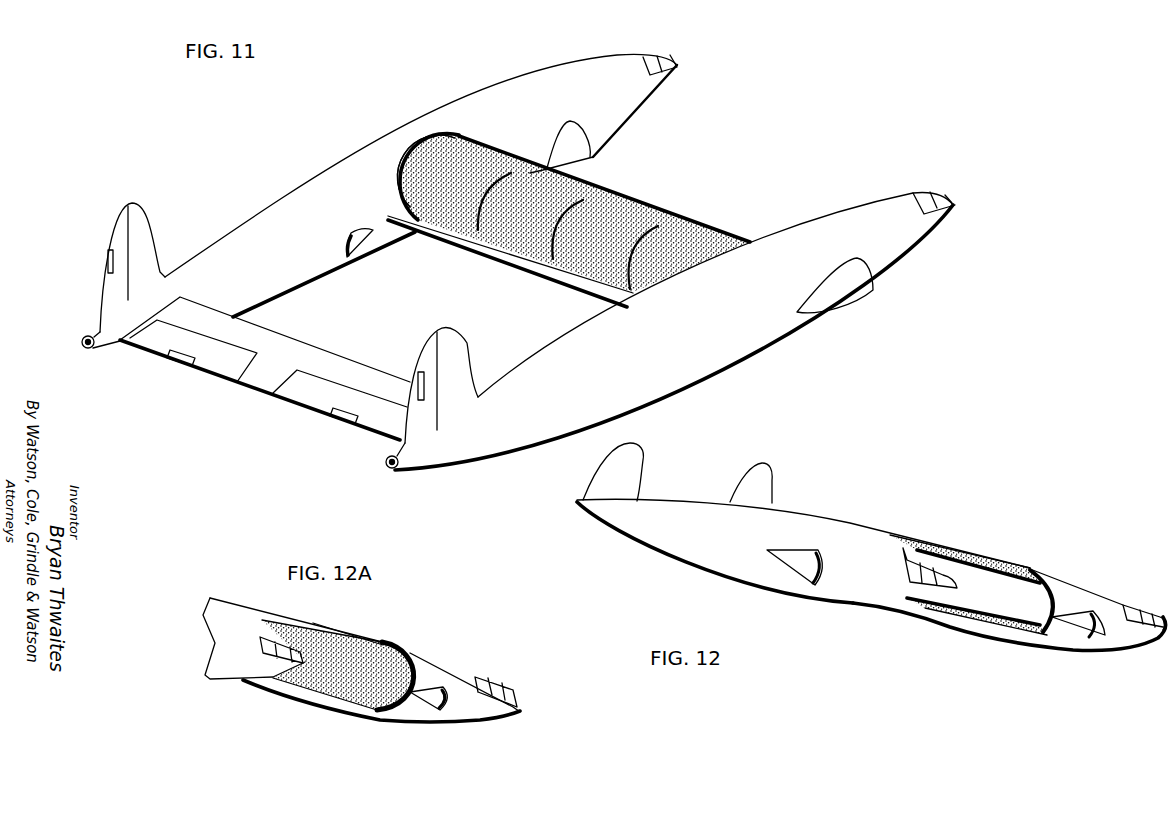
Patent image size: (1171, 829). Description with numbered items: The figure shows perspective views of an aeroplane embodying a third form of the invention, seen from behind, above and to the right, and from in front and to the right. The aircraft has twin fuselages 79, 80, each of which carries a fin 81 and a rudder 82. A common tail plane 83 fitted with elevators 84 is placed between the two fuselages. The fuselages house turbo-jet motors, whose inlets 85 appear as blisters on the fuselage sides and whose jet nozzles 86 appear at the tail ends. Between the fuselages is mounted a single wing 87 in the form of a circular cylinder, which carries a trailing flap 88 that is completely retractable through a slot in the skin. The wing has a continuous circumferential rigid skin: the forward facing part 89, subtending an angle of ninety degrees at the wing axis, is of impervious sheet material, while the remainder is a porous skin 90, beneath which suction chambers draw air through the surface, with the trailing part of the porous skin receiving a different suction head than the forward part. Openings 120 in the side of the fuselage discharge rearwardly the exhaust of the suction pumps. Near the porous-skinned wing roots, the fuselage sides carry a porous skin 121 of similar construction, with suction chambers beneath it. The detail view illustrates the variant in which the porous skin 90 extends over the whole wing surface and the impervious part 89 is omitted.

In FIG. 11, the fuselage 79 is at (790, 347).
In FIG. 12, the fuselage 79 is at (843, 527).
In FIG. 12A, the fuselage 79 is at (227, 612).
In FIG. 11, the fuselage 80 is at (482, 108).
In FIG. 12, the fuselage 80 is at (1083, 587).
In FIG. 12A, the fuselage 80 is at (440, 670).
In FIG. 11, the fin 81 is at (140, 232).
In FIG. 12, the fin 81 is at (753, 487).
In FIG. 11, the rudder 82 is at (118, 231).
In FIG. 11, the tail plane 83 is at (283, 343).
In FIG. 11, the elevators 84 is at (218, 365).
In FIG. 11, the inlets 85 is at (592, 143).
In FIG. 12, the inlets 85 is at (828, 578).
In FIG. 12A, the inlets 85 is at (445, 707).
In FIG. 11, the jet nozzles 86 is at (95, 350).
In FIG. 11, the wing 87 is at (652, 201).
In FIG. 12, the wing 87 is at (937, 546).
In FIG. 12A, the wing 87 is at (277, 621).
In FIG. 11, the trailing flap 88 is at (535, 263).
In FIG. 12, the forward facing part of the skin 89 is at (997, 592).
In FIG. 11, the porous skin 90 is at (527, 227).
In FIG. 12, the porous skin 90 is at (987, 553).
In FIG. 12A, the porous skin 90 is at (330, 638).
In FIG. 11, the openings 120 is at (342, 245).
In FIG. 11, the porous skin 121 is at (400, 163).
In FIG. 12, the porous skin 121 is at (1040, 572).
In FIG. 12A, the porous skin 121 is at (403, 648).